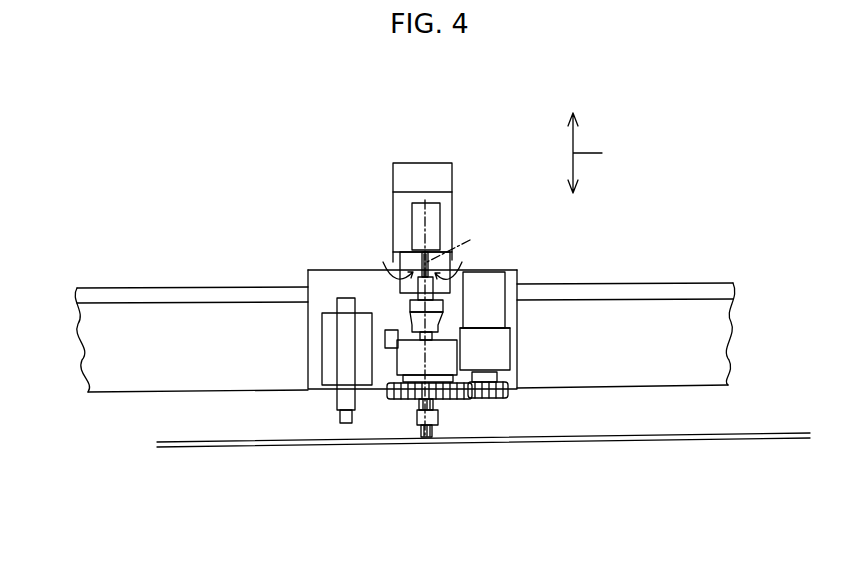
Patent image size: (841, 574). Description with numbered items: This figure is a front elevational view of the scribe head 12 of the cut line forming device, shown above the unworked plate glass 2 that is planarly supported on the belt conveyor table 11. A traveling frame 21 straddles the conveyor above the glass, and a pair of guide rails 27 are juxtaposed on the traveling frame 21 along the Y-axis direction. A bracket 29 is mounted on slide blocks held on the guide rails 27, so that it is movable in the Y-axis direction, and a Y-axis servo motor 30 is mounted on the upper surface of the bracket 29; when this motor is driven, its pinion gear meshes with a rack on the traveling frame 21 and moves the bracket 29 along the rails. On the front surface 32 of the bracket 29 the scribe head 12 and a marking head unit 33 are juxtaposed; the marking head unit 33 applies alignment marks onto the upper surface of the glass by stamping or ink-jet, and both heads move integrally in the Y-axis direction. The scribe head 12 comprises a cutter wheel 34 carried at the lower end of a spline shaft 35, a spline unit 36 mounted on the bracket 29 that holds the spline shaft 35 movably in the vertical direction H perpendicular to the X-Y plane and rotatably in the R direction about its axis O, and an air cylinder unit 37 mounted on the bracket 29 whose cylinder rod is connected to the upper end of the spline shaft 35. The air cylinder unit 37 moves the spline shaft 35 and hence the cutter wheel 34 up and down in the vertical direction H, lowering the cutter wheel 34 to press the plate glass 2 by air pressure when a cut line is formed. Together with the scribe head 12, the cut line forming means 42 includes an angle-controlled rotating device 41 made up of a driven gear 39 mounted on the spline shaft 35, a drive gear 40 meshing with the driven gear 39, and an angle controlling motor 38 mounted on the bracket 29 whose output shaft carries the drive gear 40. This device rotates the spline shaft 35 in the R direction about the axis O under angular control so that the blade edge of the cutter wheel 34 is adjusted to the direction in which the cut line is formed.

The unworked plate glass 2 is at (737, 433).
The belt conveyor table 11 is at (212, 445).
The scribe head 12 is at (400, 320).
The traveling frame 21 is at (137, 347).
The guide rails 27 is at (102, 294).
The bracket 29 is at (382, 283).
The Y-axis servo motor 30 is at (422, 177).
The front surface 32 is at (317, 282).
The marking head unit 33 is at (343, 360).
The cutter wheel 34 is at (428, 433).
The spline shaft 35 is at (433, 403).
The spline unit 36 is at (485, 352).
The air cylinder unit 37 is at (430, 228).
The angle controlling motor 38 is at (492, 318).
The driven gear 39 is at (403, 398).
The drive gear 40 is at (500, 400).
The angle-controlled rotating device 41 is at (480, 300).
The cut line forming means 42 is at (455, 283).
The R direction R is at (383, 262).
The axis O is at (470, 240).
The vertical direction H is at (597, 153).